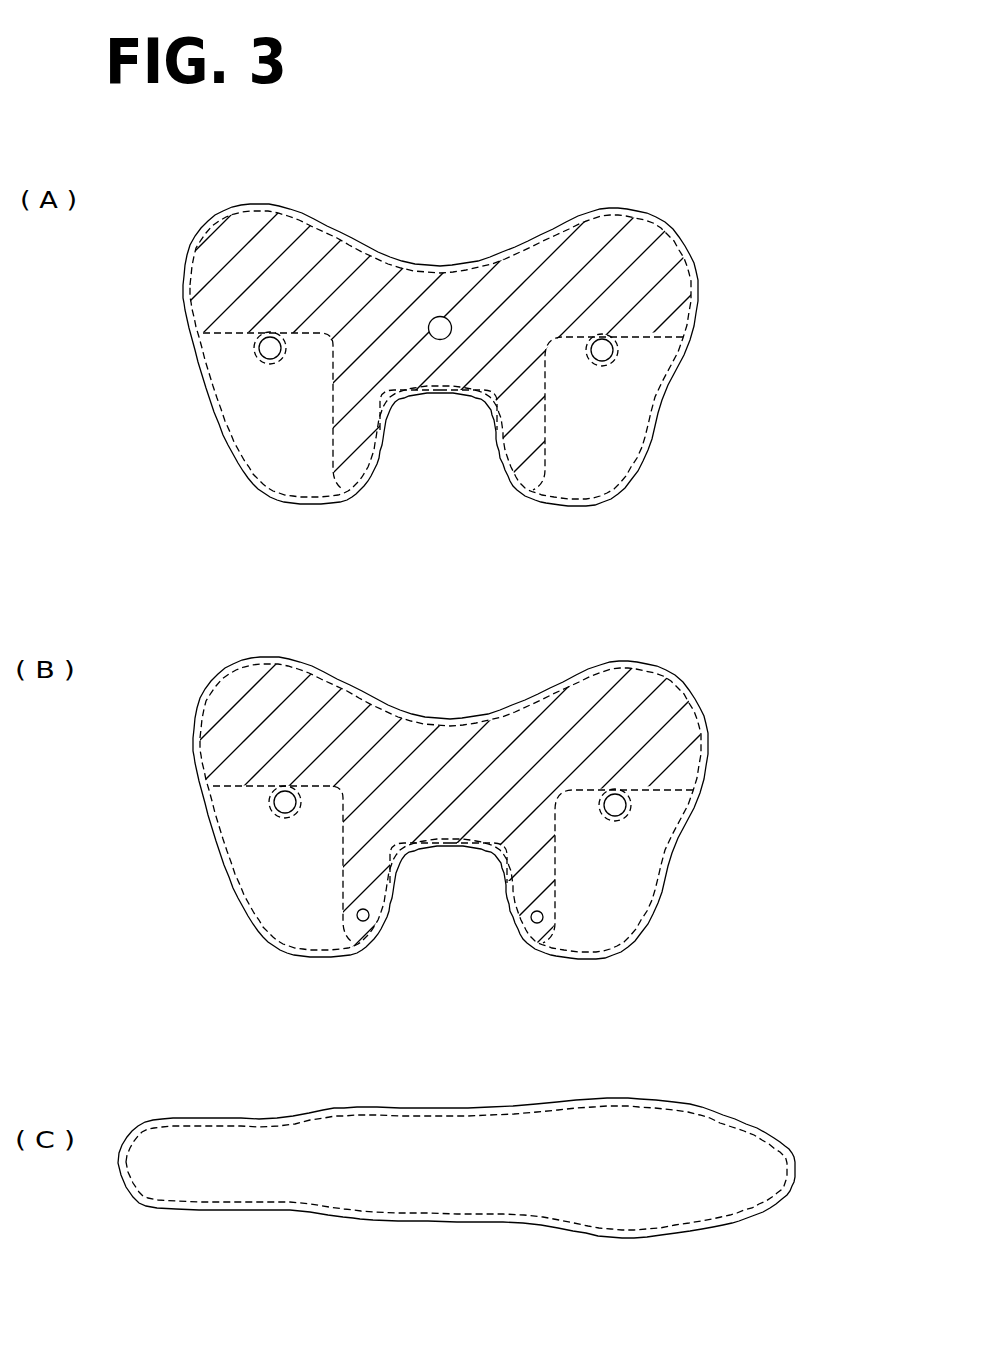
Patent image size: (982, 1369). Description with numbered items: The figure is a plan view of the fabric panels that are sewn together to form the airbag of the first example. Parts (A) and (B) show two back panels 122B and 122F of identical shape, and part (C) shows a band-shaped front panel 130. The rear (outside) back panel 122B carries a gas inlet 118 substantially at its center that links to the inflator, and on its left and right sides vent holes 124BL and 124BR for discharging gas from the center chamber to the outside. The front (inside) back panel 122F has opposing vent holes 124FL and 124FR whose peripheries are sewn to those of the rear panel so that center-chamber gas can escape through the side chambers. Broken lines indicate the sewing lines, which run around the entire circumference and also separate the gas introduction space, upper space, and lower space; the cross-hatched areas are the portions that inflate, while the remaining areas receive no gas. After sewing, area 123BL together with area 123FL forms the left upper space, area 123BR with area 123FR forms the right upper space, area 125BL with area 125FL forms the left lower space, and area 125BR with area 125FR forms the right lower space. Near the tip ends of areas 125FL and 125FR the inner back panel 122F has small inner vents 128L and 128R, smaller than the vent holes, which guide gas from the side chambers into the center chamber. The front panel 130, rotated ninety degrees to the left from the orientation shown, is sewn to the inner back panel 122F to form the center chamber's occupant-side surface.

The gas inlet 118 is at (443, 317).
The back panel 122B is at (640, 211).
The back panel 122F is at (650, 663).
The area 123BL is at (232, 277).
The area 123BR is at (655, 302).
The area 123FL is at (242, 730).
The area 123FR is at (667, 733).
The vent hole 124BL is at (263, 356).
The vent hole 124BR is at (609, 359).
The vent hole 124FL is at (277, 811).
The vent hole 124FR is at (623, 814).
The area 125BL is at (360, 462).
The area 125BR is at (515, 462).
The area 125FL is at (363, 872).
The area 125FR is at (535, 873).
The inner vent 128L is at (366, 922).
The inner vent 128R is at (534, 923).
The front panel 130 is at (138, 1122).